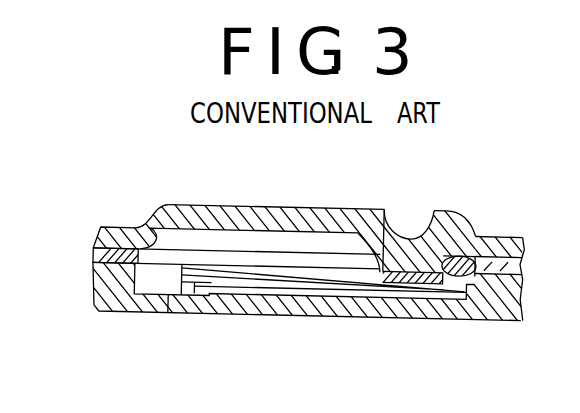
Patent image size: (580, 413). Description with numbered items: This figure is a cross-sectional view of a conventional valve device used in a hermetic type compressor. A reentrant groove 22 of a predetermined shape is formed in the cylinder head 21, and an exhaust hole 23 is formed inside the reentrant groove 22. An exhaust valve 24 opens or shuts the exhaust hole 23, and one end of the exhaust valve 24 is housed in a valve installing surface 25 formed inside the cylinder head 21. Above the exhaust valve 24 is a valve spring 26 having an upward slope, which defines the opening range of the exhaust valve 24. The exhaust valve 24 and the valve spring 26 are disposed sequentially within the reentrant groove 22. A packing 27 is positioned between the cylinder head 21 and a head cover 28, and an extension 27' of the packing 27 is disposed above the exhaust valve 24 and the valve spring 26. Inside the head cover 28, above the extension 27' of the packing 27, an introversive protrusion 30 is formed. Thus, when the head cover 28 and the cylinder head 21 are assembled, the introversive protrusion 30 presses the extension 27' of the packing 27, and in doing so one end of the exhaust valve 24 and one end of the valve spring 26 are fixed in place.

The cylinder head 21 is at (407, 322).
The reentrant groove 22 is at (148, 280).
The exhaust hole 23 is at (238, 318).
The exhaust valve 24 is at (195, 315).
The valve installing surface 25 is at (477, 214).
The valve spring 26 is at (168, 315).
The packing 27 is at (315, 303).
The extension of the packing 27' is at (329, 225).
The head cover 28 is at (213, 206).
The introversive protrusion 30 is at (420, 211).